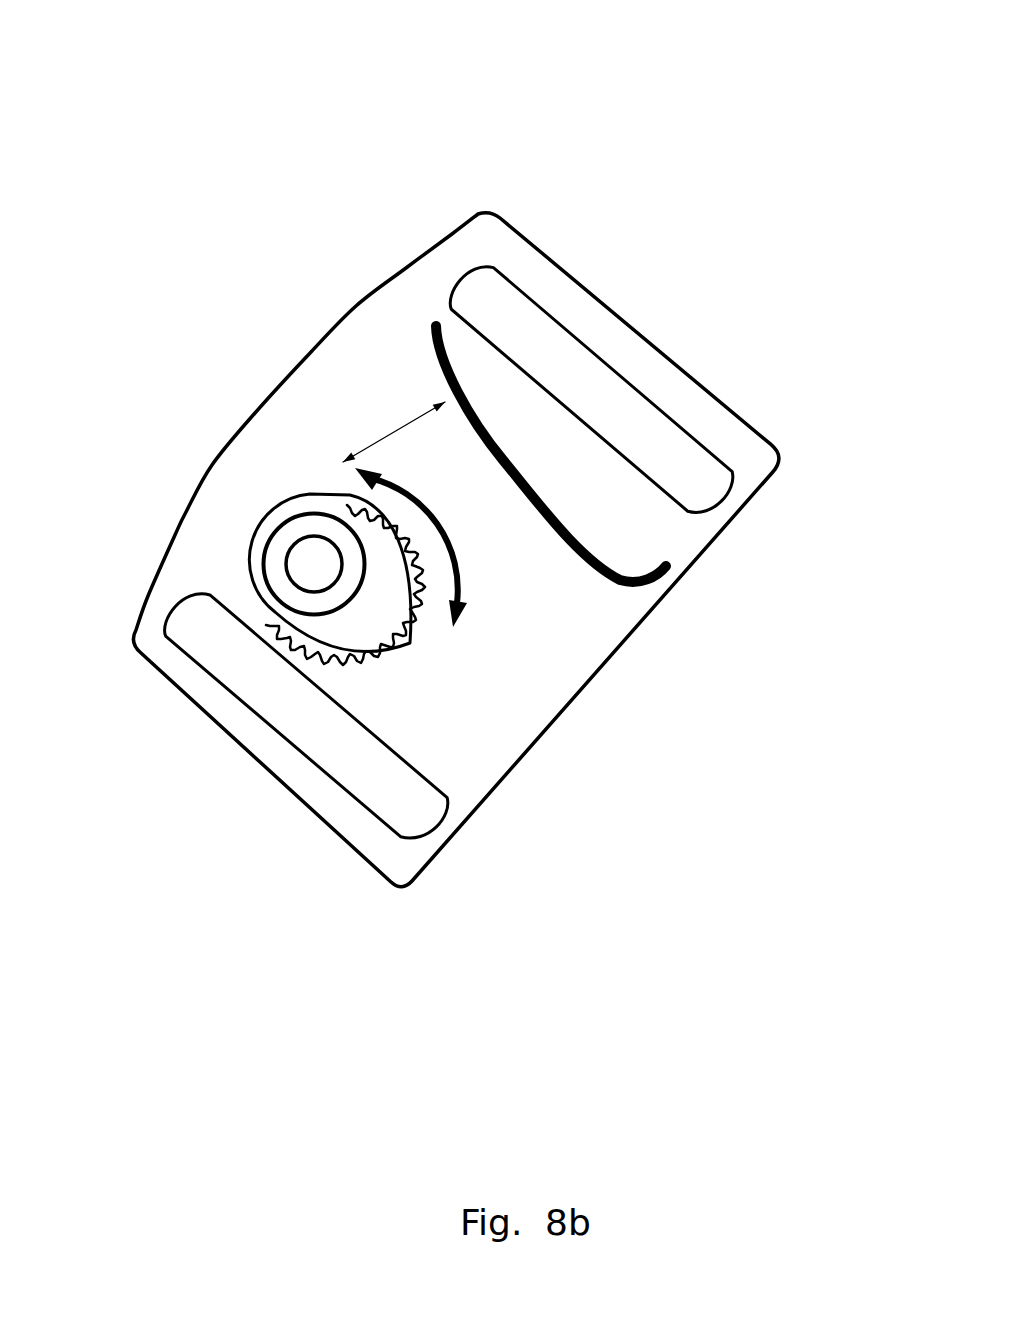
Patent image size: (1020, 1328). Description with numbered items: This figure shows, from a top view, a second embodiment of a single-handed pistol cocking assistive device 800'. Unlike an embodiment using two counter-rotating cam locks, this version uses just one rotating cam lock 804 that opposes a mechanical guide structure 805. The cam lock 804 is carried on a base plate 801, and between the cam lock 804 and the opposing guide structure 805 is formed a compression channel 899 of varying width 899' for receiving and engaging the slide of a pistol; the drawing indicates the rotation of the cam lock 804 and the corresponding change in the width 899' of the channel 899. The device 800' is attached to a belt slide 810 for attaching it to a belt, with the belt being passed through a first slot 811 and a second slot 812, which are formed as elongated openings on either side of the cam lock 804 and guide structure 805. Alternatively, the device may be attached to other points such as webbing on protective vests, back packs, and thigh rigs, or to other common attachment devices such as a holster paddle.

The single-handed pistol cocking assistive device 800' is at (472, 540).
The base plate 801 is at (265, 215).
The cam lock 804 is at (338, 625).
The mechanical guide structure 805 is at (480, 415).
The belt slide 810 is at (140, 665).
The slot 811 is at (294, 693).
The slot 812 is at (622, 411).
The compression channel 899 is at (411, 547).
The varying width 899' is at (394, 417).